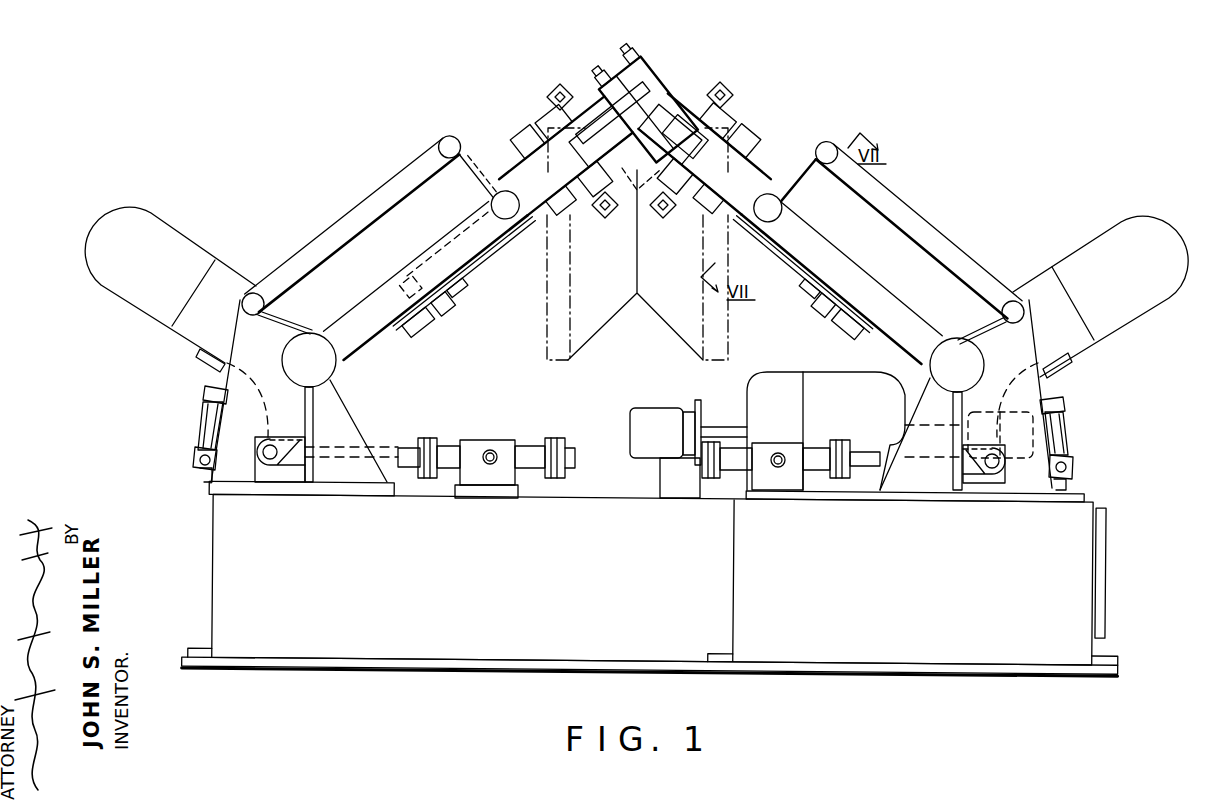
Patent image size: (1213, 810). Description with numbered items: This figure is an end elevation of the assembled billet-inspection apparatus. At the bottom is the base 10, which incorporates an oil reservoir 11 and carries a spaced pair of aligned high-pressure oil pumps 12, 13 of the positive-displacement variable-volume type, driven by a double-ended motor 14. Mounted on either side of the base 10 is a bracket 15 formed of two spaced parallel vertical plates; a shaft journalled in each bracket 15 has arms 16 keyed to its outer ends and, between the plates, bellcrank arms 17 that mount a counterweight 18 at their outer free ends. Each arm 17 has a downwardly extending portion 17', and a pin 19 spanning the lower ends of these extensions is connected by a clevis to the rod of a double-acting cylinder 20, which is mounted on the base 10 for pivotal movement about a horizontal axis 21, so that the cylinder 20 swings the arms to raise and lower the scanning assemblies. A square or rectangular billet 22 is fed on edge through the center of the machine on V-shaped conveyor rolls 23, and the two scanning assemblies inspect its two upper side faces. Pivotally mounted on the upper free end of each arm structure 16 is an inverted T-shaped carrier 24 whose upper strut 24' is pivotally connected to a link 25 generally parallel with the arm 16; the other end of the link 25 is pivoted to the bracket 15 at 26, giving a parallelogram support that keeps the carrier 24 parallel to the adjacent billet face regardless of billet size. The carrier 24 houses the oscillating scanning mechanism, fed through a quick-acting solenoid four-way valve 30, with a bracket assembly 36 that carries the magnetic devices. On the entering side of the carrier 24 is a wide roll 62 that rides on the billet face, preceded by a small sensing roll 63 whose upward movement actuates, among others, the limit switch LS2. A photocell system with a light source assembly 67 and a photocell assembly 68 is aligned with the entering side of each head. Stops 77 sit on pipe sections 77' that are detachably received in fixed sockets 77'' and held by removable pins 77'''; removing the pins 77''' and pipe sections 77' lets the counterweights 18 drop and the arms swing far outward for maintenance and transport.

The base 10 is at (648, 613).
The oil reservoir 11 is at (1090, 512).
The high-pressure oil pump 12 is at (665, 410).
The high-pressure oil pump 13 is at (972, 420).
The double-ended motor 14 is at (813, 378).
The bracket 15 is at (355, 410).
The arm 16 is at (416, 262).
The arm 17 is at (1100, 297).
The downwardly extending portion 17' is at (633, 362).
The counterweight 18 is at (1118, 232).
The pin 19 is at (990, 468).
The double-acting cylinder 20 is at (530, 446).
The horizontal axis 21 is at (490, 450).
The billet 22 is at (637, 264).
The V-shaped conveyor roll 23 is at (635, 265).
The inverted T-shaped carrier 24 is at (642, 94).
The upper strut 24' is at (815, 191).
The link 25 is at (933, 230).
The pivotal connection 26 is at (1013, 300).
The four-way valve 30 is at (537, 145).
The bracket assembly 36 is at (735, 243).
The wide roll 62 is at (645, 105).
The sensing roll 63 is at (655, 165).
The light source assembly 67 is at (558, 90).
The photocell assembly 68 is at (607, 215).
The stop 77 is at (634, 392).
The pipe section 77' is at (635, 428).
The fixed socket 77'' is at (643, 484).
The removable pin 77''' is at (633, 460).
The limit switch LS2 is at (700, 140).